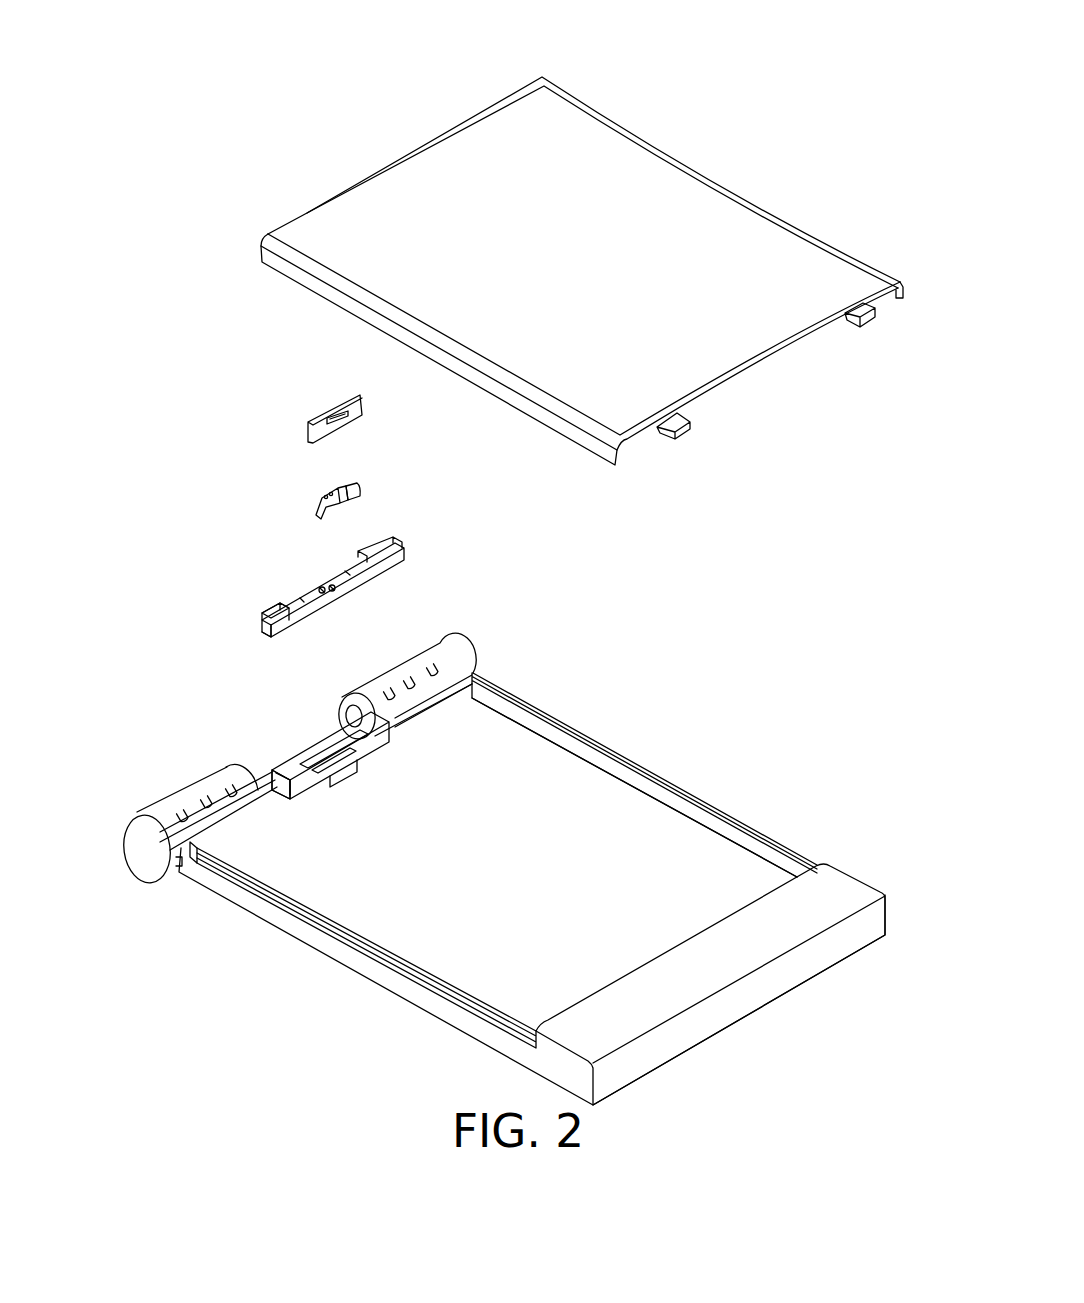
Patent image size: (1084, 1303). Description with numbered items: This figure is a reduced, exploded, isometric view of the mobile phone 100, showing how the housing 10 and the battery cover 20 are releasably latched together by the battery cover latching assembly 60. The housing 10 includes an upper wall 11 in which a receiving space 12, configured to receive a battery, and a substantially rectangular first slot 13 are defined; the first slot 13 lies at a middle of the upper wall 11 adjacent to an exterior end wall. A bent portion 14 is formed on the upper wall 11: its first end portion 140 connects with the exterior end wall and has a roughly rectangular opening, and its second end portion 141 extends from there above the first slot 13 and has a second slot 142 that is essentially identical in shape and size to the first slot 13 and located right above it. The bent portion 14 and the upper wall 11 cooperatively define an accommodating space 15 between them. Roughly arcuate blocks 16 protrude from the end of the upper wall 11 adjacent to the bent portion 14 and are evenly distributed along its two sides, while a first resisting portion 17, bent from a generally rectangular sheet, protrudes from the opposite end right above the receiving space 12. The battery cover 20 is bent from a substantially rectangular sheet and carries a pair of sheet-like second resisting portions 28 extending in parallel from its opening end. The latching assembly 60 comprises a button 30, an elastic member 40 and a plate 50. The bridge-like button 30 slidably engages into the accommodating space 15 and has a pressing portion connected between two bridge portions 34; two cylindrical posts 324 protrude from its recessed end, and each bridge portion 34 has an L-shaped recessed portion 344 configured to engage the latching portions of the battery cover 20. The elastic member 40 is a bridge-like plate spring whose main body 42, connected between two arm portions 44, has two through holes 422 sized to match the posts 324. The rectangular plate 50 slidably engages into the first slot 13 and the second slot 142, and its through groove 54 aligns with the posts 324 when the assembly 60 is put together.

The mobile phone 100 is at (536, 44).
The housing 10 is at (583, 721).
The upper wall 11 is at (197, 850).
The receiving space 12 is at (682, 840).
The first slot 13 is at (367, 743).
The bent portion 14 is at (366, 713).
The first end portion 140 is at (272, 768).
The second end portion 141 is at (362, 710).
The second slot 142 is at (360, 732).
The accommodating space 15 is at (288, 783).
The blocks 16 is at (233, 783).
The first resisting portion 17 is at (837, 882).
The battery cover 20 is at (662, 116).
The second resisting portions 28 is at (865, 311).
The button 30 is at (279, 599).
The cylindrical posts 324 is at (330, 600).
The bridge portions 34 is at (278, 633).
The recessed portion 344 is at (258, 625).
The elastic member 40 is at (304, 508).
The main body 42 is at (333, 487).
The through holes 422 is at (323, 490).
The arm portions 44 is at (358, 492).
The plate 50 is at (298, 428).
The through groove 54 is at (337, 417).
The battery cover latching assembly 60 is at (200, 400).